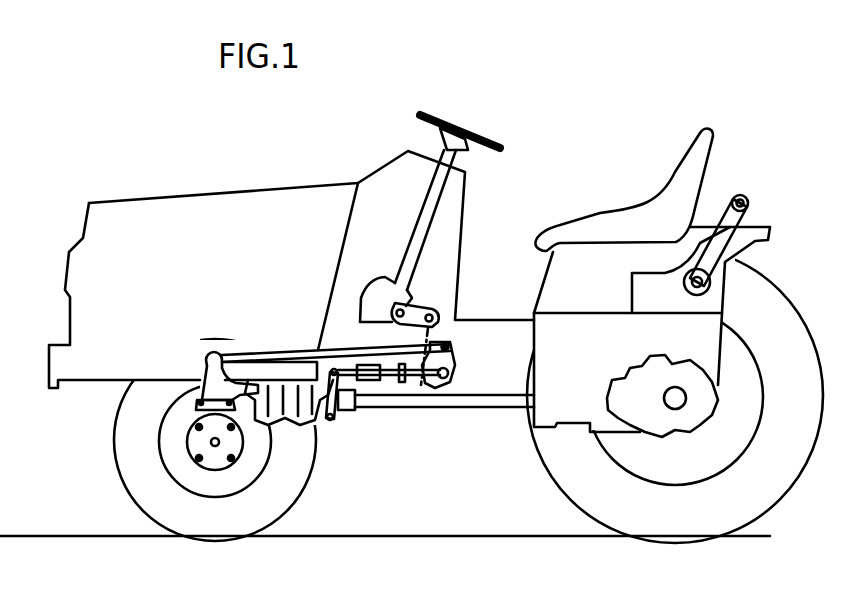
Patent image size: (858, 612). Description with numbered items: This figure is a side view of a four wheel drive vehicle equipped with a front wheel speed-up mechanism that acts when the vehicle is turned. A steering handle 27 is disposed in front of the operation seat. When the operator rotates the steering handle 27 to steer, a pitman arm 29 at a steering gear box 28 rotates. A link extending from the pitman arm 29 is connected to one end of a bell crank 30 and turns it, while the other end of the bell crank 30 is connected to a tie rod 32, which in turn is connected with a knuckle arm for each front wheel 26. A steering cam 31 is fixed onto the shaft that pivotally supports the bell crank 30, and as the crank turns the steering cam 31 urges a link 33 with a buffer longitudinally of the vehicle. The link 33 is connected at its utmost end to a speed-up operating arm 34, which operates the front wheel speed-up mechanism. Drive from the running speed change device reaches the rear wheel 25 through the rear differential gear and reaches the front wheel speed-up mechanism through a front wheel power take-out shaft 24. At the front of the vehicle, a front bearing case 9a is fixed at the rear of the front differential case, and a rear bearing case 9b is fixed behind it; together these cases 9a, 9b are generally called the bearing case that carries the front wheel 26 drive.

The front bearing case 9a is at (275, 422).
The rear bearing case 9b is at (348, 408).
The front wheel power take-out shaft 24 is at (478, 405).
The rear wheel 25 is at (710, 528).
The front wheel 26 is at (238, 530).
The steering handle 27 is at (503, 145).
The steering gear box 28 is at (378, 284).
The pitman arm 29 is at (418, 306).
The bell crank 30 is at (449, 348).
The steering cam 31 is at (455, 384).
The tie rod 32 is at (295, 350).
The link with buffer 33 is at (373, 383).
The speed-up operating arm 34 is at (340, 420).